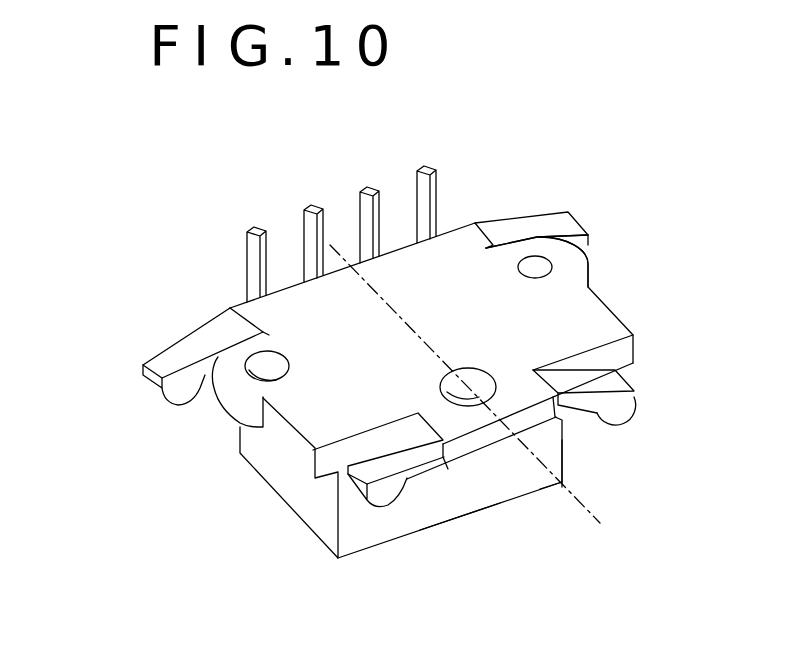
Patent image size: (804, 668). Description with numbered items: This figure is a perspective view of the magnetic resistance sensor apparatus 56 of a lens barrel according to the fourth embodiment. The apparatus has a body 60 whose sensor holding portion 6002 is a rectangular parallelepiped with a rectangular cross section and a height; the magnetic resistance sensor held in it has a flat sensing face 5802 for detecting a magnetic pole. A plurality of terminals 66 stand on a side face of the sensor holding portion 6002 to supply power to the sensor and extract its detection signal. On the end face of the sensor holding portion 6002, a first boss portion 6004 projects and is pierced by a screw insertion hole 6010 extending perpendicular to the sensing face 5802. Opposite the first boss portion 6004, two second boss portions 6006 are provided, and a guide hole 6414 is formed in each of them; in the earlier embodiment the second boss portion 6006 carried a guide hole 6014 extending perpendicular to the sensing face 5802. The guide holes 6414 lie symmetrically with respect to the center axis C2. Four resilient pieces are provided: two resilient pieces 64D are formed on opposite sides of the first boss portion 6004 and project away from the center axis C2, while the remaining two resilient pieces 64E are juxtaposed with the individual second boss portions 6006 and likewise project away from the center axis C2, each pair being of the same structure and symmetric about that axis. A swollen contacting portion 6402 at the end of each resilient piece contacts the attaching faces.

The magnetic resistance sensor apparatus 56 is at (630, 172).
The terminals 66 is at (427, 163).
The screw insertion hole 6010 is at (468, 366).
The guide hole 6414 is at (537, 256).
The resilient pieces 64E is at (144, 392).
The second boss portion 6006 is at (237, 426).
The resilient pieces 64D is at (337, 490).
The contacting portion 6402 is at (182, 403).
The guide hole 6014 is at (216, 409).
The first boss portion 6004 is at (457, 420).
The sensor holding portion 6002 is at (427, 510).
The sensing face 5802 is at (463, 515).
The body 60 is at (563, 490).
The center axis C2 is at (600, 528).